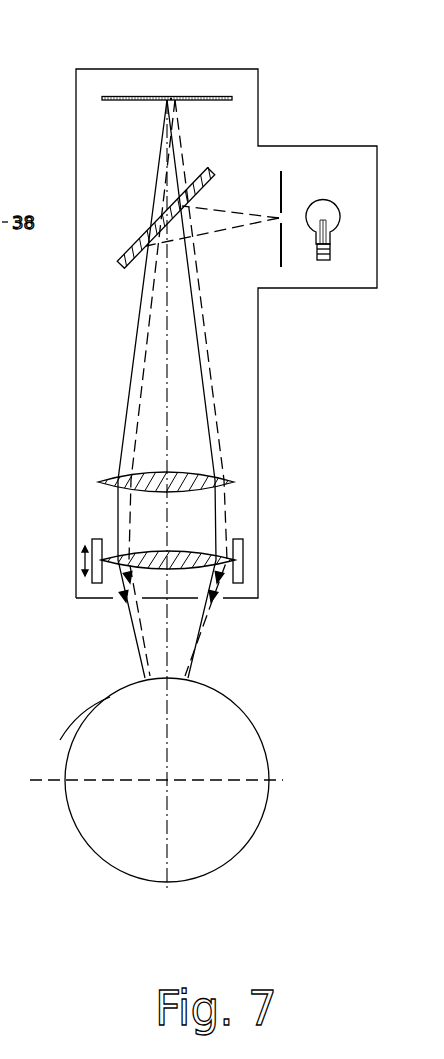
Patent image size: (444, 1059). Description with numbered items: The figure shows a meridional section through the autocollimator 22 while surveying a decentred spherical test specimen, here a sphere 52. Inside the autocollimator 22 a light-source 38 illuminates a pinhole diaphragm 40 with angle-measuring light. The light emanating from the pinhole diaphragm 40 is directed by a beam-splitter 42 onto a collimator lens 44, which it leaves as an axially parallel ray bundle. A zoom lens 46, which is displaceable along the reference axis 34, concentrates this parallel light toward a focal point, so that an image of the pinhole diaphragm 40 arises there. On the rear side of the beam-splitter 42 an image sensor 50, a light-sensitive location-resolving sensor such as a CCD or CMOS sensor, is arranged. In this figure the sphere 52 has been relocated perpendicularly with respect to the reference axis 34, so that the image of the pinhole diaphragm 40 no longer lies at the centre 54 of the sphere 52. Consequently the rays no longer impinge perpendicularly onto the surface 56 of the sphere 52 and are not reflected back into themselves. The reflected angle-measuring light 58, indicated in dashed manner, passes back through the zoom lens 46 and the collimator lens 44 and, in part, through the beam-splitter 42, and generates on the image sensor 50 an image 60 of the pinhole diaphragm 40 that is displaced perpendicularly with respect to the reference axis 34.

The autocollimator 22 is at (307, 110).
The image sensor 50 is at (118, 101).
The image of the pinhole diaphragm 60 is at (178, 103).
The beam-splitter 42 is at (128, 252).
The reference axis 34 is at (166, 331).
The reflected angle-measuring light 58 is at (217, 398).
The collimator lens 44 is at (198, 474).
The zoom lens 46 is at (196, 550).
The pinhole diaphragm 40 is at (285, 196).
The light-source 38 is at (350, 226).
The sphere 52 is at (248, 758).
The surface of the sphere 56 is at (80, 715).
The centre of the sphere 54 is at (162, 781).